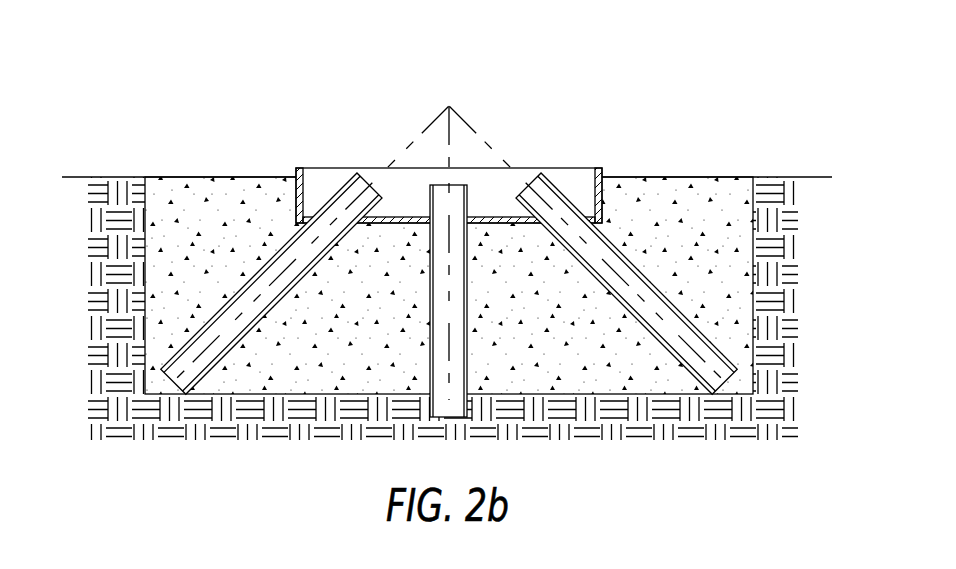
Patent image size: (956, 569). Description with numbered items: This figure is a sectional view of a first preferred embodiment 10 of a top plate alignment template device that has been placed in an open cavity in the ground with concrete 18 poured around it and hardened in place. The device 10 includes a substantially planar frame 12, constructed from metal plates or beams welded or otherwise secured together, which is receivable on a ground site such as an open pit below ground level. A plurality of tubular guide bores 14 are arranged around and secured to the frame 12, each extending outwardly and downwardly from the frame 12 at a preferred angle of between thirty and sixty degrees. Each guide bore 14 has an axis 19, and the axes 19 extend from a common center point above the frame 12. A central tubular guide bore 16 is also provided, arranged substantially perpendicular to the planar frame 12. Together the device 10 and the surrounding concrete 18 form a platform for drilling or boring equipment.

The top plate alignment template device 10 is at (447, 222).
The frame 12 is at (320, 186).
The tubular guide bores 14 is at (283, 247).
The central tubular guide bore 16 is at (468, 204).
The concrete 18 is at (207, 198).
The axis 19 is at (410, 147).